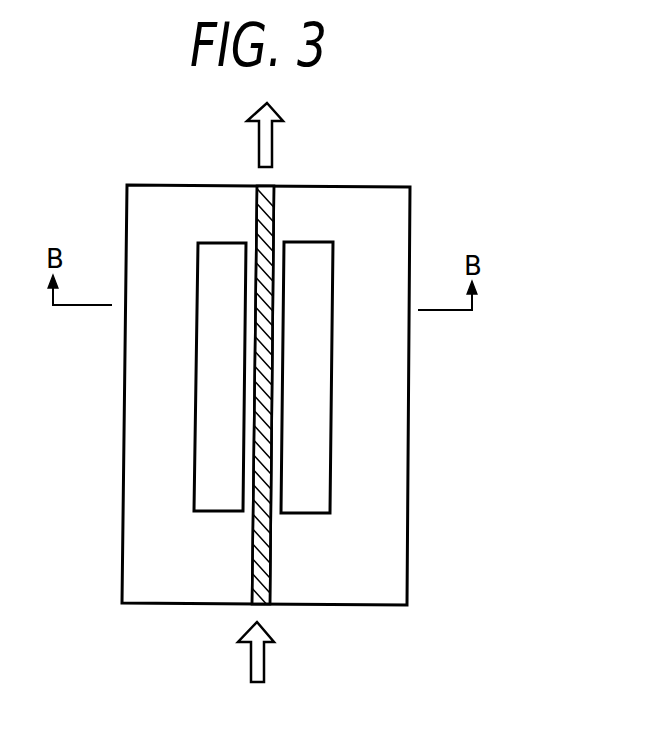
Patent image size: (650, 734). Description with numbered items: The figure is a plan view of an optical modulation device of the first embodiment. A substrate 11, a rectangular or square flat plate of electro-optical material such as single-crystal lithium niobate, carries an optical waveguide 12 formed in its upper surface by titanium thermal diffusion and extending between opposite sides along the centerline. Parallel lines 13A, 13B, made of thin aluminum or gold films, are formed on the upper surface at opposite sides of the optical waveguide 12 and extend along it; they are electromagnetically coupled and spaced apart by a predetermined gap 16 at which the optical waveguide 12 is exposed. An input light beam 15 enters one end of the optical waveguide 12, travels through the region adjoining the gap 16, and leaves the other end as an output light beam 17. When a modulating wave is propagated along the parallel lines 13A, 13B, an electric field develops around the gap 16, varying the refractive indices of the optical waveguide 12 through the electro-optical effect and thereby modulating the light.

The substrate 11 is at (383, 249).
The optical waveguide 12 is at (270, 555).
The parallel line 13A is at (215, 478).
The parallel line 13B is at (304, 404).
The input light beam 15 is at (251, 664).
The gap 16 is at (252, 351).
The output light beam 17 is at (272, 145).